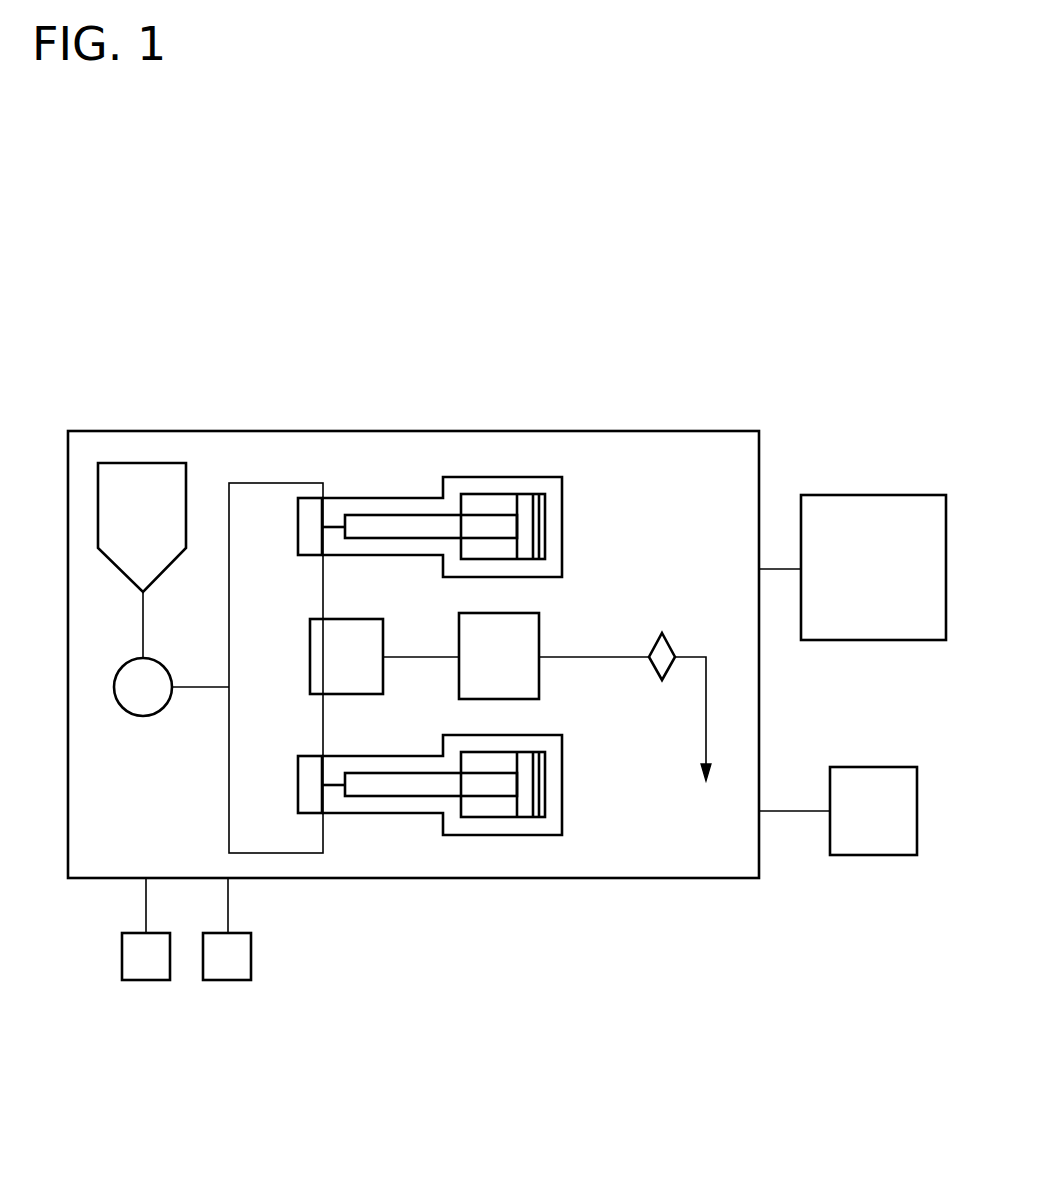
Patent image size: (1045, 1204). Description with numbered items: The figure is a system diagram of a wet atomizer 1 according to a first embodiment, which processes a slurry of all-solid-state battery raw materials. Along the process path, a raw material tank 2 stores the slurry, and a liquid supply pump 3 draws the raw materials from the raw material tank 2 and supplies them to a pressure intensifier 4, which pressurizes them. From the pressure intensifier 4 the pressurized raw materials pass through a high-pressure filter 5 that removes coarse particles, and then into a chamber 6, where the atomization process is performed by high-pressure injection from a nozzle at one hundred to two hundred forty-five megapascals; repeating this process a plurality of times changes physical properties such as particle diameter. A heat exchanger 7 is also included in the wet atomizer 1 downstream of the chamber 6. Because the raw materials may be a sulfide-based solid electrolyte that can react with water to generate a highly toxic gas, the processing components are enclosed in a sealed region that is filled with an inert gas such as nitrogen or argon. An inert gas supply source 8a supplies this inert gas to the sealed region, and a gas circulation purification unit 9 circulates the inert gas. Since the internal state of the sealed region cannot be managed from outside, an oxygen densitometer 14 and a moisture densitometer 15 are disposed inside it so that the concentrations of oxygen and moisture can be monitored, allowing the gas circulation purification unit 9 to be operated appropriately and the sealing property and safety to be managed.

The wet atomizer 1 is at (787, 1024).
The raw material tank 2 is at (168, 568).
The liquid supply pump 3 is at (143, 717).
The pressure intensifier 4 is at (563, 515).
The high-pressure filter 5 is at (386, 627).
The chamber 6 is at (541, 629).
The heat exchanger 7 is at (652, 664).
The inert gas supply source 8a is at (873, 856).
The gas circulation purification unit 9 is at (873, 641).
The oxygen densitometer 14 is at (230, 981).
The moisture densitometer 15 is at (148, 981).